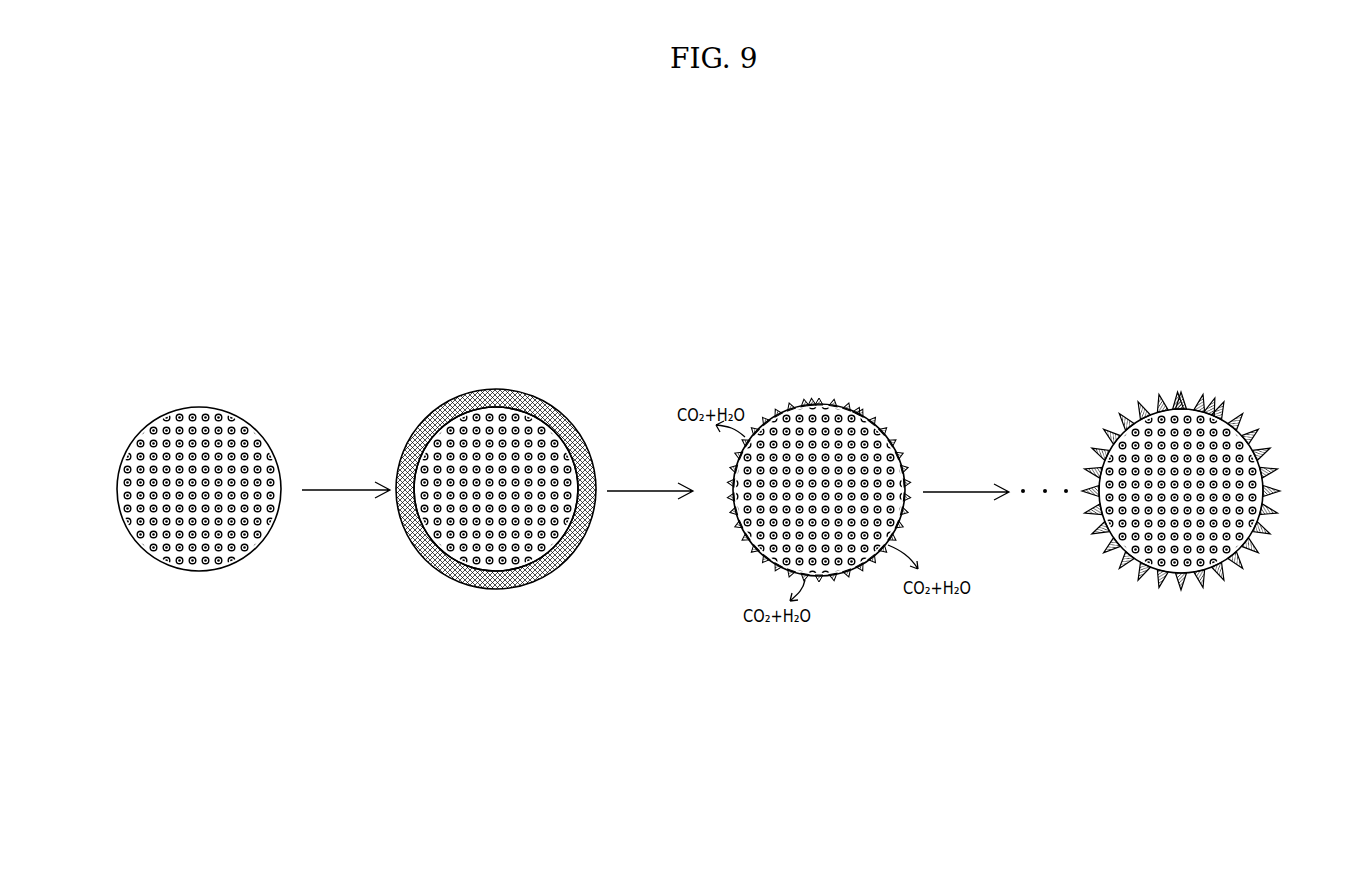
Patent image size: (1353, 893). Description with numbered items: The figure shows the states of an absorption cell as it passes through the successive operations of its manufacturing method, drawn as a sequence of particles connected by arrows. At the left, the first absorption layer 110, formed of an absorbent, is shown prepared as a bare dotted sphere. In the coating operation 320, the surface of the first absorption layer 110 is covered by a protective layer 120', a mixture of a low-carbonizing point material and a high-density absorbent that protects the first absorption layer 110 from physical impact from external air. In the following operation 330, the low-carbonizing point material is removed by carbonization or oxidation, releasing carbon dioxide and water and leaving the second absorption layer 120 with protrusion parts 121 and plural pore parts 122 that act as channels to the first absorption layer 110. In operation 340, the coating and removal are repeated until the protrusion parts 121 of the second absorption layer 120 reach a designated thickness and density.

The first absorption layer 110 is at (178, 560).
The protective layer 120' is at (496, 513).
The second absorption layer 120 is at (1003, 436).
The protrusion parts 121 is at (812, 406).
The pore parts 122 is at (858, 412).
The operation of coating with protective layer 320 is at (325, 490).
The operation of removing low-carbonizing point material 330 is at (641, 491).
The operation of repeating coating and removal 340 is at (957, 492).